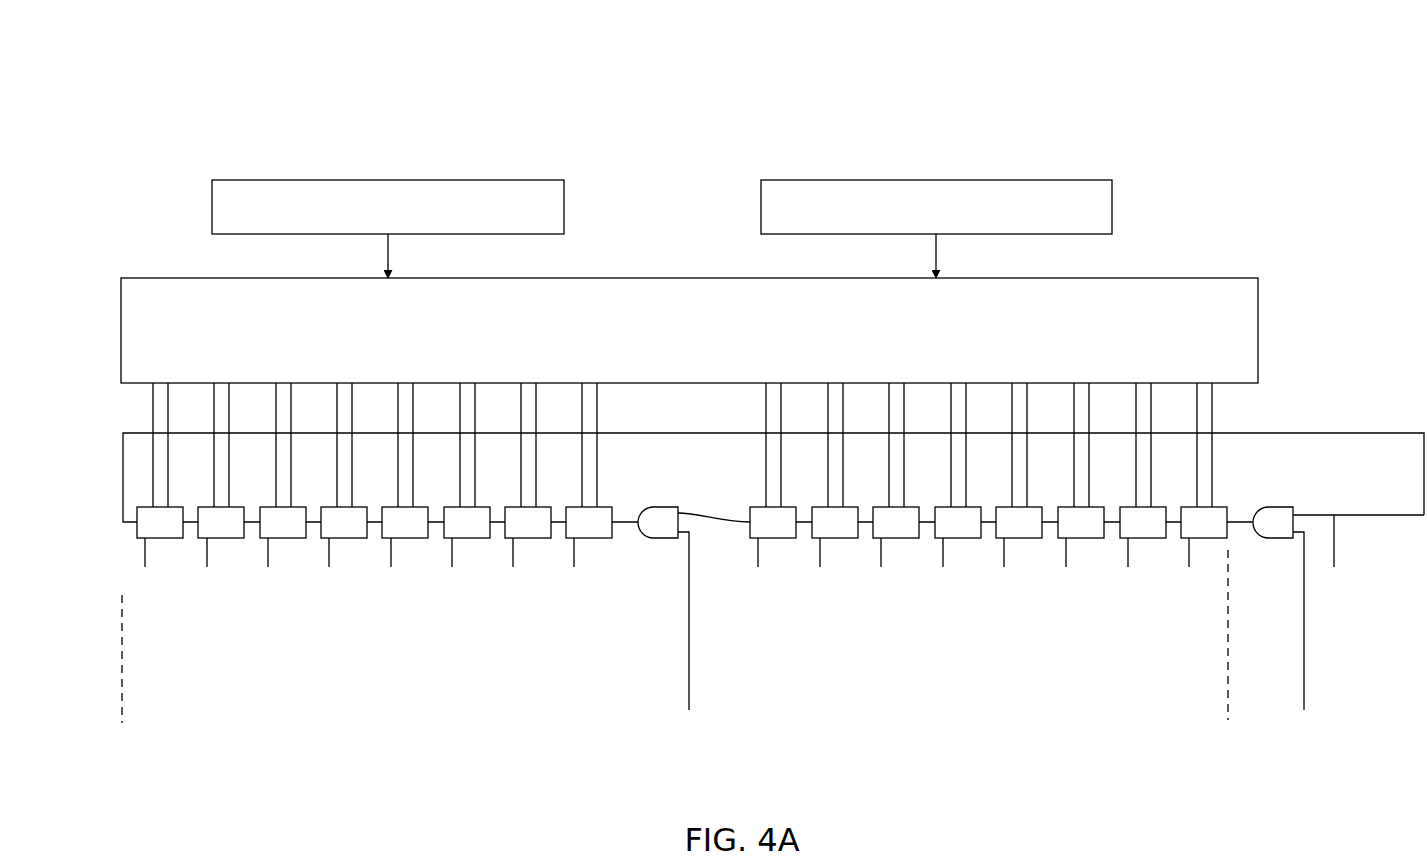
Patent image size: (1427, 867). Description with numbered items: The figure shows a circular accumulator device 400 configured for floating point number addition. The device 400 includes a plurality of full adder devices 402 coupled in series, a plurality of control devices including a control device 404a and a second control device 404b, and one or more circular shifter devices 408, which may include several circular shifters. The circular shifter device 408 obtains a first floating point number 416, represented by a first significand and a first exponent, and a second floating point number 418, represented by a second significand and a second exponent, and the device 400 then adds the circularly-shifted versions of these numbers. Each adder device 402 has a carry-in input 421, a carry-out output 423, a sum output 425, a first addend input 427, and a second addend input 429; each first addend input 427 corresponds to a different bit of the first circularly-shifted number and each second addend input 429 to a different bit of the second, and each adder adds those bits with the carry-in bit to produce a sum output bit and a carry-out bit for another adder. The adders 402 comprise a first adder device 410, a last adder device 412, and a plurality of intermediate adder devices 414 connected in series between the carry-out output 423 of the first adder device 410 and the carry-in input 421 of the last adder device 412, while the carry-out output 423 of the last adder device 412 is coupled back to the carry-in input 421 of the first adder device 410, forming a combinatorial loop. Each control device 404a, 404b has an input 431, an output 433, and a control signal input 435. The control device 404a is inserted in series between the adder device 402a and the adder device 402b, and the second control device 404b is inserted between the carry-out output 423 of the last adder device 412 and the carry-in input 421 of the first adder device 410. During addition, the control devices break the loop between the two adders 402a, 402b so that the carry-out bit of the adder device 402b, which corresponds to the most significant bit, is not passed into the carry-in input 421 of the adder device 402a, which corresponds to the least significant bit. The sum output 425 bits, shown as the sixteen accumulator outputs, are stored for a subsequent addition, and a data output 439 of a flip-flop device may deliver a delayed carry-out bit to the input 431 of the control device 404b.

The circular accumulator device 400 is at (382, 53).
The plurality of full adder devices 402 is at (661, 588).
The adder device 402a is at (613, 542).
The adder device 402b is at (748, 542).
The control device 404a is at (673, 507).
The second control device 404b is at (1283, 507).
The circular shifter device 408 is at (1213, 278).
The first adder device 410 is at (1213, 507).
The last adder device 412 is at (133, 532).
The plurality of intermediate adder devices 414 is at (1172, 627).
The first floating point number 416 is at (253, 180).
The second floating point number 418 is at (1073, 180).
The carry-in input 421 is at (190, 543).
The carry-out output 423 is at (142, 433).
The sum output 425 is at (777, 580).
The first addend input 427 is at (763, 402).
The second addend input 429 is at (783, 392).
The input 431 is at (715, 513).
The output 433 is at (633, 510).
The control signal input 435 is at (688, 548).
The data output 439 is at (1344, 512).